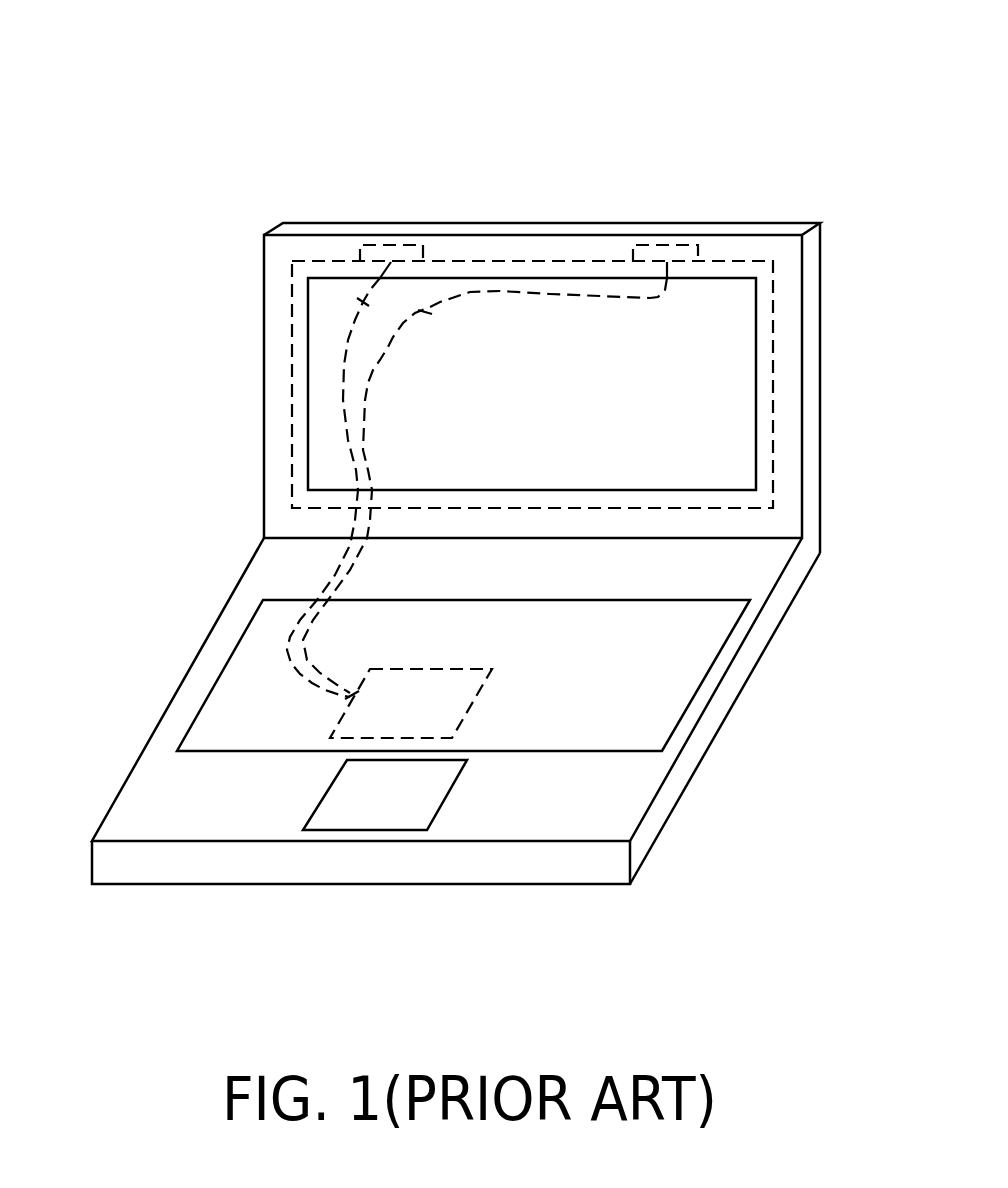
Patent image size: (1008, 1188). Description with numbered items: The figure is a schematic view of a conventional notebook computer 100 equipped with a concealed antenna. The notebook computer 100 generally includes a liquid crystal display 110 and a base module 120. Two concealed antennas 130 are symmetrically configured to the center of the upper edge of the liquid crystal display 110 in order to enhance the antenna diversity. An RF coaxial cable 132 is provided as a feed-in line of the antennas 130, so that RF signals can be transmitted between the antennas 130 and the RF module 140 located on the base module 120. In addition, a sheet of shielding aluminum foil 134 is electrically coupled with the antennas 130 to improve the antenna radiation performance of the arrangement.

The notebook computer 100 is at (190, 43).
The liquid crystal display 110 is at (531, 410).
The base module 120 is at (447, 711).
The concealed antennas 130 is at (393, 246).
The RF coaxial cable 132 is at (363, 302).
The shielding aluminum foil 134 is at (292, 354).
The RF module 140 is at (337, 728).